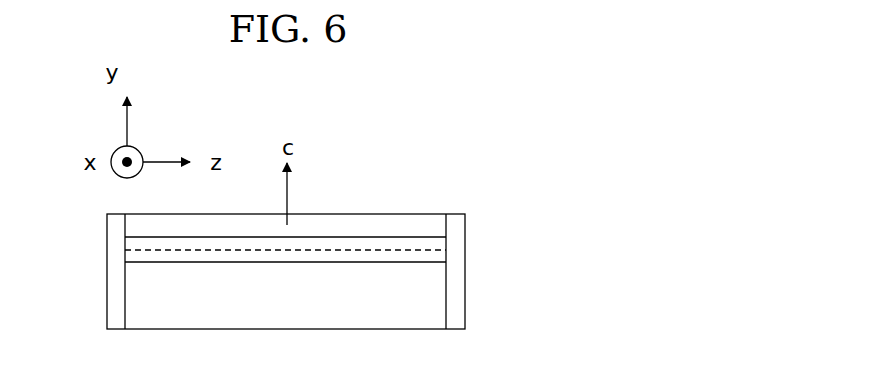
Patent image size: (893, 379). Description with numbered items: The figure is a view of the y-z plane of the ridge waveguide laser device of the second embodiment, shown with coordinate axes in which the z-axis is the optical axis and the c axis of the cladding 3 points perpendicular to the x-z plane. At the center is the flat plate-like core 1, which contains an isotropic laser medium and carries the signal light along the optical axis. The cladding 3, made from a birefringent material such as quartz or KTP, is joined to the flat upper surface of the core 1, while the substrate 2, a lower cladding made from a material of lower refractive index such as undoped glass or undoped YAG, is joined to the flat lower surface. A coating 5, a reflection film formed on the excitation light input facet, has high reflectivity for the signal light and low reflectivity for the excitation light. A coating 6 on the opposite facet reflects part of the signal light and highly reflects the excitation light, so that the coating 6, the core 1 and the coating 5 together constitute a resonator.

The core 1 is at (443, 252).
The substrate 2 is at (435, 294).
The cladding 3 is at (435, 223).
The coating 5 is at (118, 272).
The coating 6 is at (457, 321).